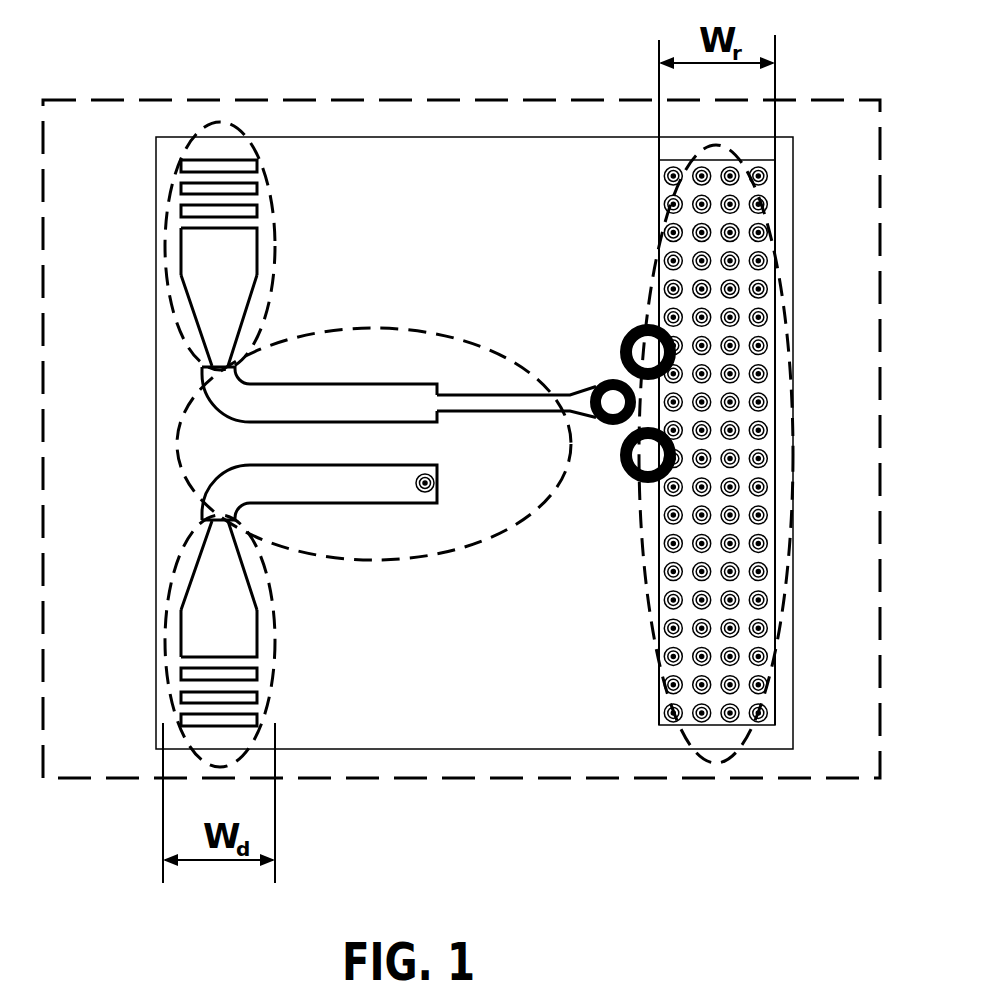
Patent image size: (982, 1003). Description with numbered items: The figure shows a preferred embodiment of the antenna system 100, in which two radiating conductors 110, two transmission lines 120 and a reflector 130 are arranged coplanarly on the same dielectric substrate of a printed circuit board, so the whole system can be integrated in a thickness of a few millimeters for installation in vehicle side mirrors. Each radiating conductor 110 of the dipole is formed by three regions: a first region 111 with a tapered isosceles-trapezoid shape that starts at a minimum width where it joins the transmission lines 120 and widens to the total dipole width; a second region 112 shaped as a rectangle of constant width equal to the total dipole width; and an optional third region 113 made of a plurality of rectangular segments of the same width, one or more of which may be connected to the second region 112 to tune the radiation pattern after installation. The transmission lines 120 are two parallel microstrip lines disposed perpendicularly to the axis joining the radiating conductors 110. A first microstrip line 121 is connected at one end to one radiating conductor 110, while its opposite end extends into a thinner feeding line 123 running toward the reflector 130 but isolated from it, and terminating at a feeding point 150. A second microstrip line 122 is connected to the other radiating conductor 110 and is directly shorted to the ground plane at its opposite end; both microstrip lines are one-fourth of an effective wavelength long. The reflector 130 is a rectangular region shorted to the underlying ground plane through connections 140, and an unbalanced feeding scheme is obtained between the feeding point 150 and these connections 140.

The antenna system 100 is at (158, 100).
The radiating conductor 110 is at (231, 444).
The first region 111 is at (218, 315).
The second region 112 is at (220, 242).
The third region 113 is at (207, 188).
The transmission lines 120 is at (386, 456).
The first microstrip line 121 is at (348, 400).
The second microstrip line 122 is at (345, 482).
The feeding line 123 is at (485, 398).
The reflector 130 is at (648, 618).
The connection 140 is at (637, 330).
The feeding point 150 is at (612, 400).